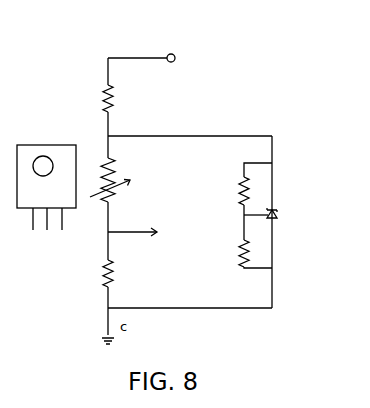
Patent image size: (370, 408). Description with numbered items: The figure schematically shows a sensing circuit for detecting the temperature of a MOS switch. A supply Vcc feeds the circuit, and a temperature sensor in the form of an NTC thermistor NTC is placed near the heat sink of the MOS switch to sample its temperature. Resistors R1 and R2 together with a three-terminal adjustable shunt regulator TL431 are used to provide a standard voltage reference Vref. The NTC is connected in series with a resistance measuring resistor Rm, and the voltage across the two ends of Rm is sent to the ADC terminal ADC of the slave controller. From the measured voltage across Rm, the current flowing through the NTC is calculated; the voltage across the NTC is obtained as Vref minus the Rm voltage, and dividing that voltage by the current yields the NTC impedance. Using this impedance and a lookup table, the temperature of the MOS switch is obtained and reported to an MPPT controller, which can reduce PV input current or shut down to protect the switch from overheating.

The supply voltage terminal Vcc is at (156, 58).
The standard voltage reference Vref is at (190, 125).
The NTC thermistor NTC is at (126, 180).
The ADC terminal ADC is at (148, 232).
The resistance measuring resistor Rm is at (94, 273).
The resistor R1 is at (229, 191).
The resistor R2 is at (229, 253).
The three-terminal adjustable shunt regulator TL431 is at (283, 224).